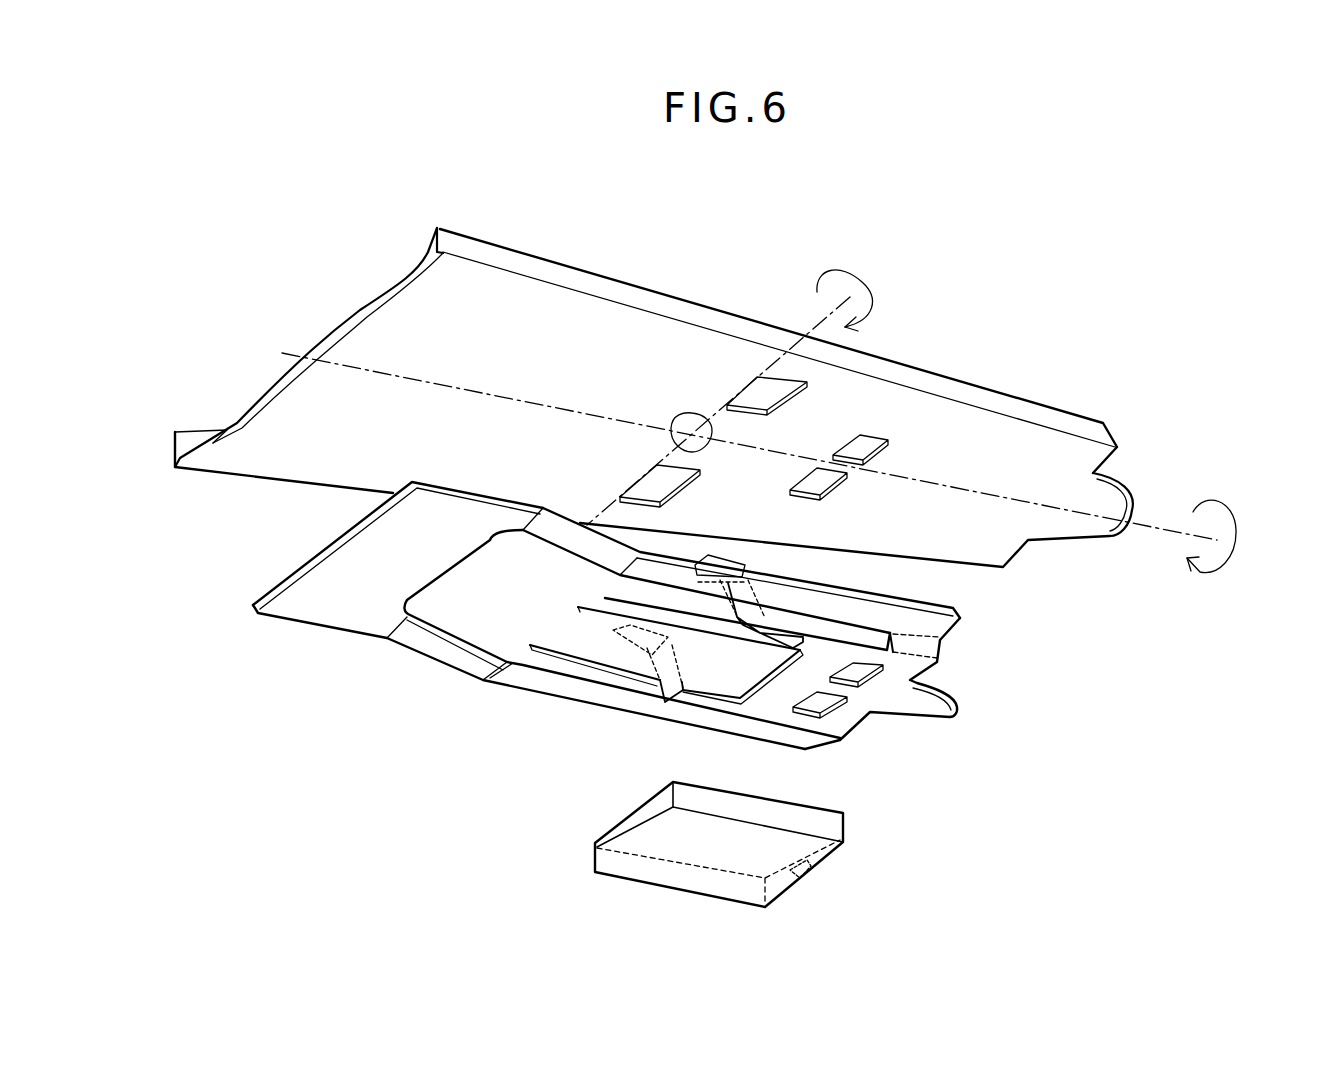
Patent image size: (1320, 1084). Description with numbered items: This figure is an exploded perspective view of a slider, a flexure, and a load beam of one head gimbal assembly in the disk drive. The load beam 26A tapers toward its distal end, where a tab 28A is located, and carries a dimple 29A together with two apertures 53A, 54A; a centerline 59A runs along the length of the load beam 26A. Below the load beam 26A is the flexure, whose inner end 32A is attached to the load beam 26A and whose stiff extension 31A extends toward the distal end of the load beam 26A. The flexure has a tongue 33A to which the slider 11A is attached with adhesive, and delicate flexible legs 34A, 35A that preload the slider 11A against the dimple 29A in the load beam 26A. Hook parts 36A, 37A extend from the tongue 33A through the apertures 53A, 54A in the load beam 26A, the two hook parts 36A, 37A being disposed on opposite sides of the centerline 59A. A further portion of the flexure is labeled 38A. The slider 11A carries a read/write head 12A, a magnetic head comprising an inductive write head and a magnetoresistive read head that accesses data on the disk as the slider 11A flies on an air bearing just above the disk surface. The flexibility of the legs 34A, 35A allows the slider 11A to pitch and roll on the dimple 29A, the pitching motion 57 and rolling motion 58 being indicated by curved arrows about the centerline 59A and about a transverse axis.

The slider 11A is at (707, 883).
The read/write head 12A is at (798, 880).
The load beam 26A is at (965, 443).
The tab 28A is at (1110, 510).
The dimple 29A is at (707, 450).
The stiff extension 31A is at (933, 705).
The inner end 32A is at (366, 588).
The tongue 33A is at (575, 652).
The flexible leg 34A is at (885, 621).
The flexible leg 35A is at (637, 707).
The hook part 36A is at (760, 556).
The hook part 37A is at (617, 615).
The plate portion 38A is at (845, 720).
The aperture 53A is at (747, 383).
The aperture 54A is at (647, 468).
The pitching motion 57 is at (853, 320).
The rolling motion 58 is at (1237, 523).
The centerline 59A is at (472, 392).